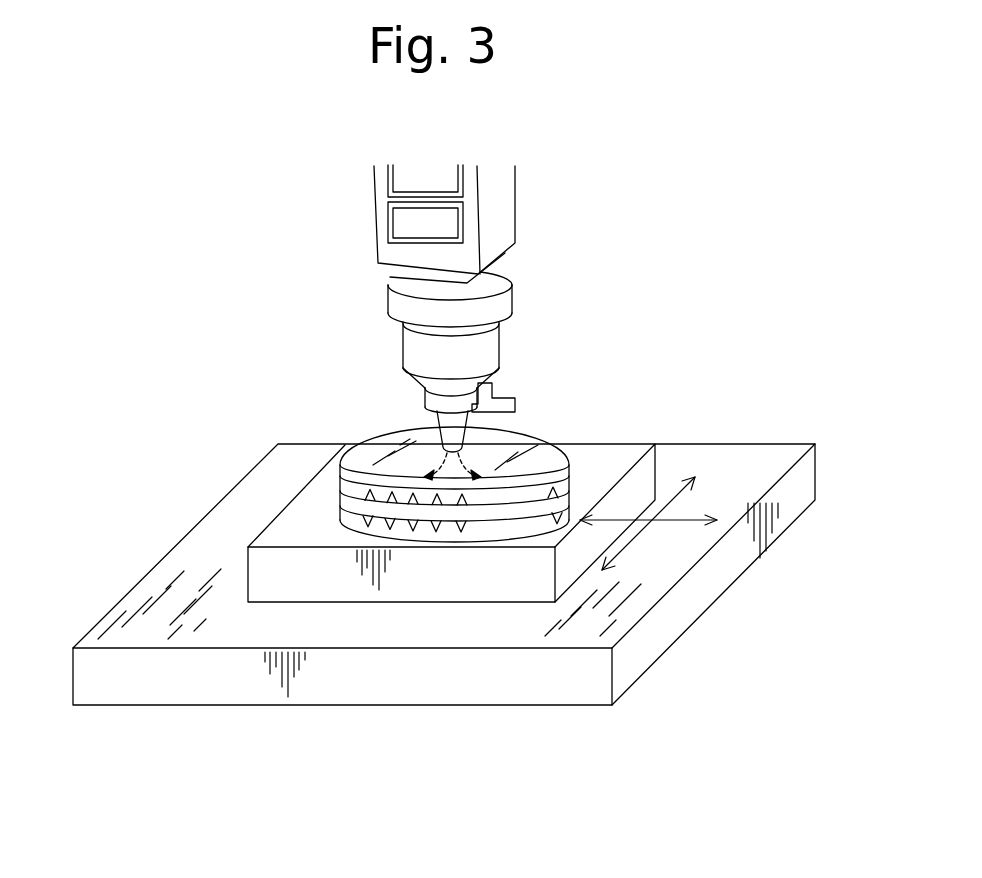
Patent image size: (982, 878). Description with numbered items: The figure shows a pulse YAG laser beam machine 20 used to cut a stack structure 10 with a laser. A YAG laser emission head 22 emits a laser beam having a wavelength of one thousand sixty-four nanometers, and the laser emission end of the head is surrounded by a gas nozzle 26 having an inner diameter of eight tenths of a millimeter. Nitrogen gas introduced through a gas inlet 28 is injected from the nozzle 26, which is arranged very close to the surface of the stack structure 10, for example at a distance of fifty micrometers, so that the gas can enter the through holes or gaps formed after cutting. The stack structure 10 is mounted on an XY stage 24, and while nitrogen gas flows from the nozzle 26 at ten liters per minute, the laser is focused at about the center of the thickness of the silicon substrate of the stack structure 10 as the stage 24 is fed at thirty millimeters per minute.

The stack structure 10 is at (372, 452).
The pulse YAG laser beam machine 20 is at (617, 242).
The YAG laser emission head 22 is at (378, 183).
The XY stage 24 is at (466, 584).
The gas nozzle 26 is at (437, 420).
The gas inlet 28 is at (503, 399).